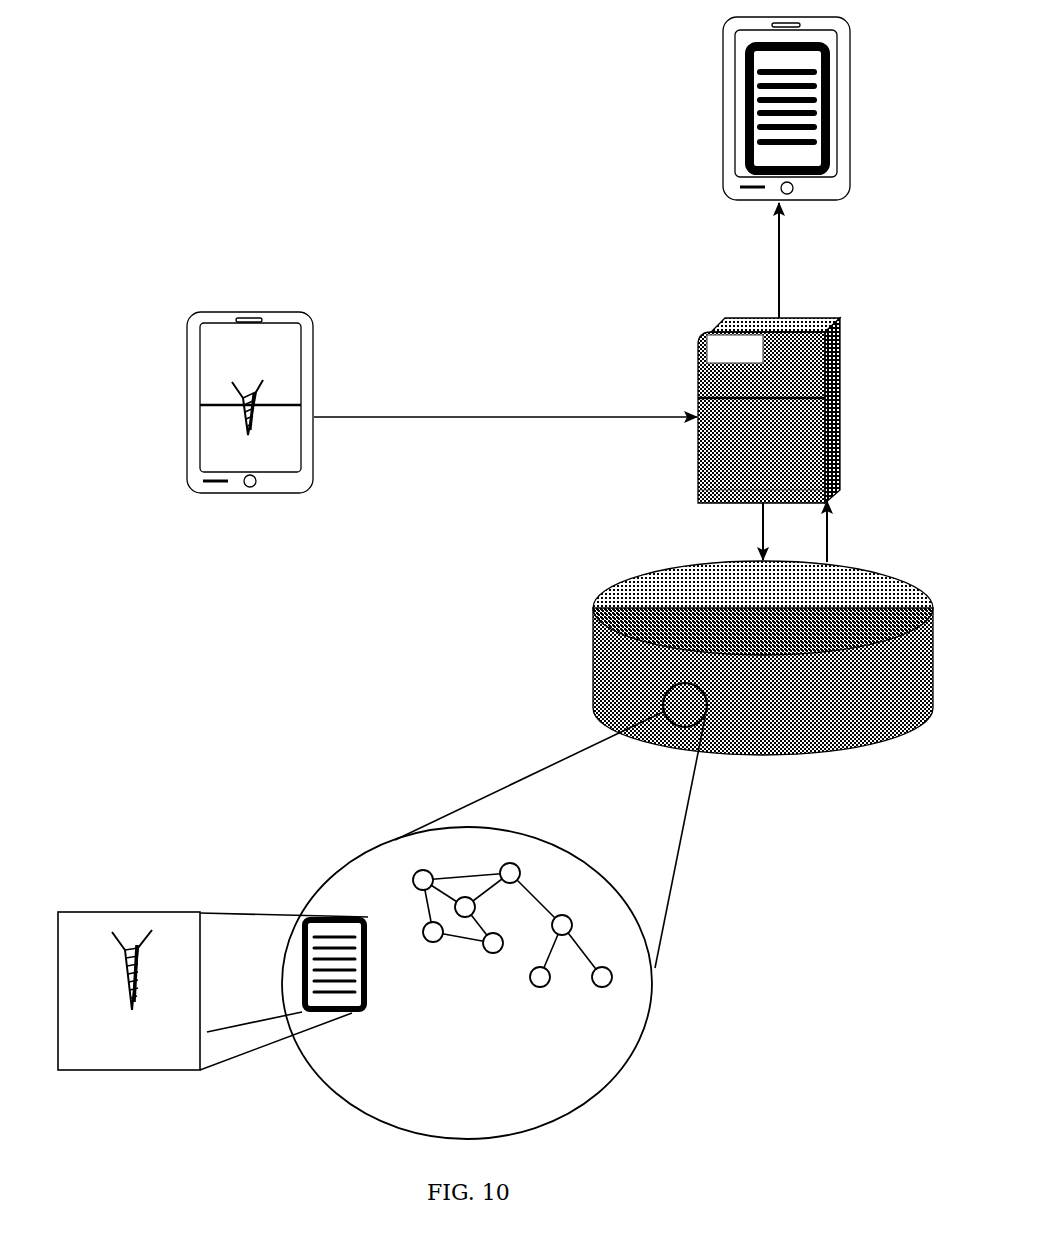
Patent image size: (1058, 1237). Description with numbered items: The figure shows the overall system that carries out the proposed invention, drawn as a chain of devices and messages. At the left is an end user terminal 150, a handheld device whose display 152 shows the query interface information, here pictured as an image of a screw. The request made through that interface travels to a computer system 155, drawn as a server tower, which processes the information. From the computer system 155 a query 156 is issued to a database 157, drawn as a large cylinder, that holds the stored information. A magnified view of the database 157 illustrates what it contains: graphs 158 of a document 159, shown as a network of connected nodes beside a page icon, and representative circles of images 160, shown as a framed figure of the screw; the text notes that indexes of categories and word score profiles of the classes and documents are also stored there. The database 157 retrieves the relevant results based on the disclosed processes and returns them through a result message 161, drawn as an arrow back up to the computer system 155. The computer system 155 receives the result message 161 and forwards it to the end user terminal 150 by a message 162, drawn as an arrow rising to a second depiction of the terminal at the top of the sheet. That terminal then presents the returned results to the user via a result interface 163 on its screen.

The end user terminal 150 is at (721, 34).
The display 152 is at (266, 370).
The computer system 155 is at (681, 389).
The query 156 is at (736, 555).
The database 157 is at (699, 632).
The graphs 158 is at (479, 871).
The document 159 is at (351, 908).
The representative circles of images 160 is at (99, 920).
The result message 161 is at (846, 553).
The message 162 is at (798, 300).
The result interface 163 is at (842, 143).